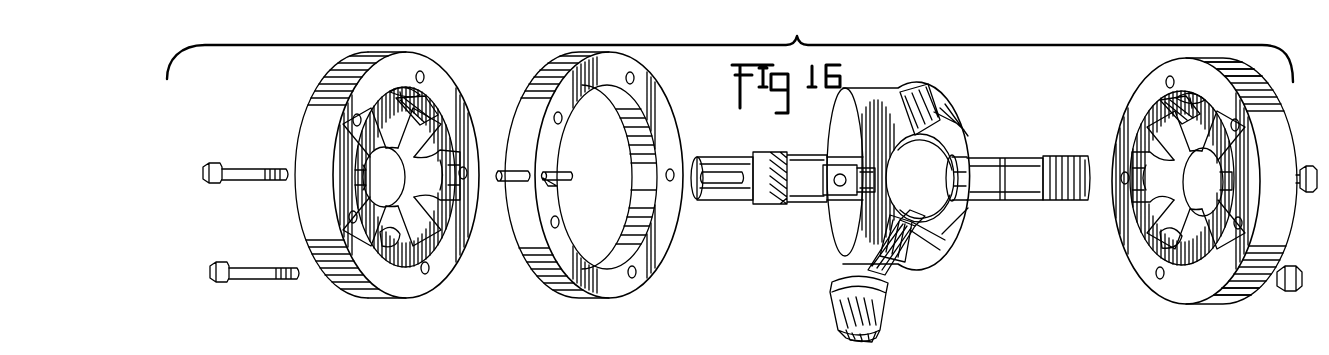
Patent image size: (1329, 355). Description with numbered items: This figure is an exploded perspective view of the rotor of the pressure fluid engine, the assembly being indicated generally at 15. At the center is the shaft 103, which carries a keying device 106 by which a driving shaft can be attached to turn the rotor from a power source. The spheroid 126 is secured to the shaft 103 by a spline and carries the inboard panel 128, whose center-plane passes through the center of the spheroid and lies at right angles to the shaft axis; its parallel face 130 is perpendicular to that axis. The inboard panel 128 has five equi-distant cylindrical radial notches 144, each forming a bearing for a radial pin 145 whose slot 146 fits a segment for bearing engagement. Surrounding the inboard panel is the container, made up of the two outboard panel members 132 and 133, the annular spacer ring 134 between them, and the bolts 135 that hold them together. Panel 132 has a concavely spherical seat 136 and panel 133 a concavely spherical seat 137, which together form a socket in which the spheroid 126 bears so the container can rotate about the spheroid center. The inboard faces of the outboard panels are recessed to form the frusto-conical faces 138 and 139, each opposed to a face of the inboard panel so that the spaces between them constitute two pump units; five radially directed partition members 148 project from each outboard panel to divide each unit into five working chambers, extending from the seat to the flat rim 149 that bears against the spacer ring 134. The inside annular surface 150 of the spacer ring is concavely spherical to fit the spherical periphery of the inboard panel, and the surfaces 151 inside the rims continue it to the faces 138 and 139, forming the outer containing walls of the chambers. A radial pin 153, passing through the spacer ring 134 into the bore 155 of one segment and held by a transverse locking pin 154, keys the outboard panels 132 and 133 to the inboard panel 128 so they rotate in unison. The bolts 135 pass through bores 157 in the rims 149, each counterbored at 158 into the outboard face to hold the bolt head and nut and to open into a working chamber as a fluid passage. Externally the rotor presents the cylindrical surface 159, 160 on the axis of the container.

The motor assembly 15 is at (433, 318).
The shaft 103 is at (955, 170).
The keying device 106 is at (710, 175).
The spheroid 126 is at (935, 125).
The panel 128 is at (920, 140).
The face 130 is at (935, 245).
The outboard panel member 132 is at (334, 262).
The outboard panel member 133 is at (1275, 215).
The annular spacer ring 134 is at (543, 88).
The bolts 135 is at (250, 258).
The seat 136 is at (410, 176).
The concavely spherical seat 137 is at (1178, 186).
The face 138 is at (432, 150).
The face 139 is at (1162, 158).
The radial notches 144 is at (912, 265).
The radial pin 145 is at (845, 295).
The slot 146 is at (872, 326).
The partition members 148 is at (380, 238).
The rim 149 is at (372, 90).
The inside annular surface 150 is at (650, 148).
The surfaces 151 is at (426, 100).
The radial pin 153 is at (502, 181).
The transverse locking pin 154 is at (560, 180).
The bore 155 is at (838, 190).
The bores 157 is at (424, 76).
The counterbore 158 is at (402, 92).
The cylindrical surface 159 is at (345, 71).
The cylindrical surface 160 is at (572, 38).